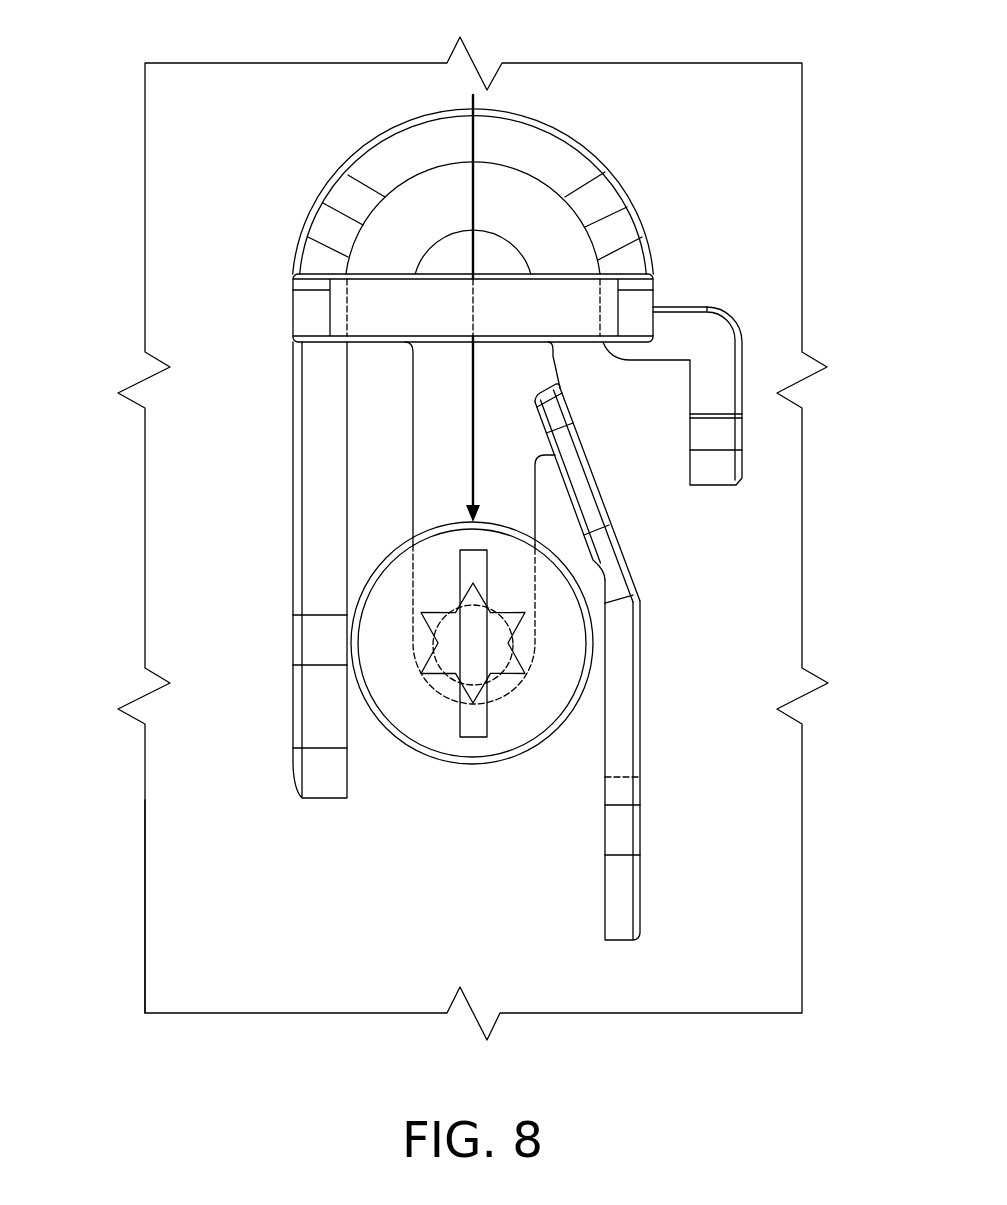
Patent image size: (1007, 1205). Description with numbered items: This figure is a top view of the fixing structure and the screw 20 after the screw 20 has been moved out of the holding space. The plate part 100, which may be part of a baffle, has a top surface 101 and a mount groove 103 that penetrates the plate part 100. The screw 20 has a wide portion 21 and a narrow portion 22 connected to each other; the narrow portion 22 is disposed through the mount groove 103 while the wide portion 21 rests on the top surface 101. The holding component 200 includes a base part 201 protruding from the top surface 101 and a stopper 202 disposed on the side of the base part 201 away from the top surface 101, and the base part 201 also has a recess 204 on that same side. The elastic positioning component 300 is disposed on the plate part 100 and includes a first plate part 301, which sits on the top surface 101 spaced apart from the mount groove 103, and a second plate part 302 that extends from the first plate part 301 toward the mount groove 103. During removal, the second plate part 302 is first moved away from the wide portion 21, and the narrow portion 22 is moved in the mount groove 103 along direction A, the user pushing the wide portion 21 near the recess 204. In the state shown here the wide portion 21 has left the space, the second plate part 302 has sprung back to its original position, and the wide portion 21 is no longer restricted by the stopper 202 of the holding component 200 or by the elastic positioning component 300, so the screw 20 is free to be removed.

The plate part 100 is at (175, 522).
The top surface 101 is at (180, 855).
The mount groove 103 is at (430, 493).
The screw 20 is at (312, 643).
The wide portion 21 is at (387, 598).
The narrow portion 22 is at (453, 708).
The holding component 200 is at (619, 405).
The base part 201 is at (741, 396).
The stopper 202 is at (586, 405).
The recess 204 is at (553, 154).
The elastic positioning component 300 is at (740, 641).
The first plate part 301 is at (620, 648).
The second plate part 302 is at (595, 513).
The direction A is at (474, 143).